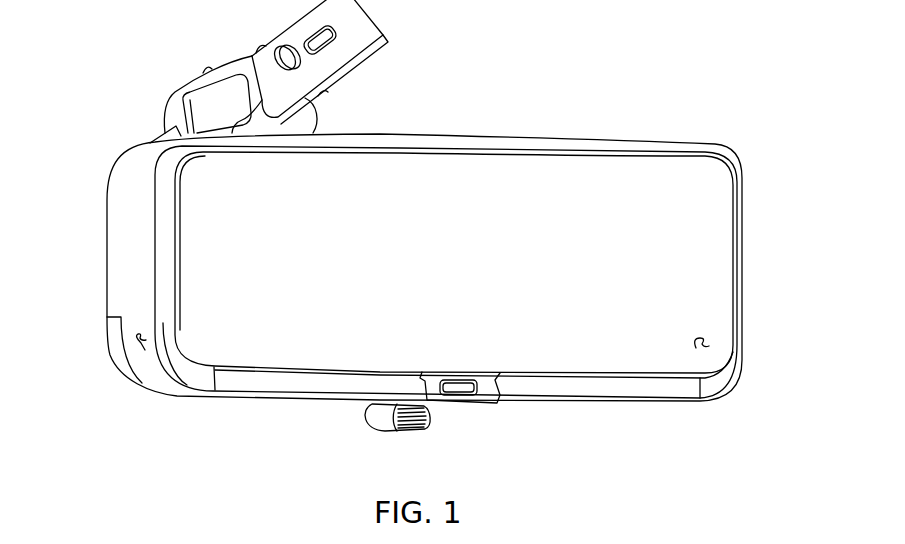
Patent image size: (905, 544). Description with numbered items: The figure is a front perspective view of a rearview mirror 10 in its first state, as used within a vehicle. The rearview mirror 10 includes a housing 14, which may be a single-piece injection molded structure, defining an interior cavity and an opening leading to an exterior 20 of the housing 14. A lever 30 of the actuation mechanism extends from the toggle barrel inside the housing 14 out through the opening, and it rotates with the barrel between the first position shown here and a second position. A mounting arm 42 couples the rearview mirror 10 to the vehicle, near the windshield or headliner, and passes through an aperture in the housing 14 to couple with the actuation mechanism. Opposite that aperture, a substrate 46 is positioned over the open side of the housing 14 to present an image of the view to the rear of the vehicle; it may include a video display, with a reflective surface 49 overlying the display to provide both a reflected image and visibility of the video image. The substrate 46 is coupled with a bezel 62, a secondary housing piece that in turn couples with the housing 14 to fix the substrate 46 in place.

The rearview mirror 10 is at (667, 57).
The housing 14 is at (137, 275).
The exterior 20 is at (140, 343).
The lever 30 is at (428, 415).
The mounting arm 42 is at (167, 102).
The substrate 46 is at (716, 234).
The reflective surface 49 is at (709, 344).
The bezel 62 is at (655, 388).